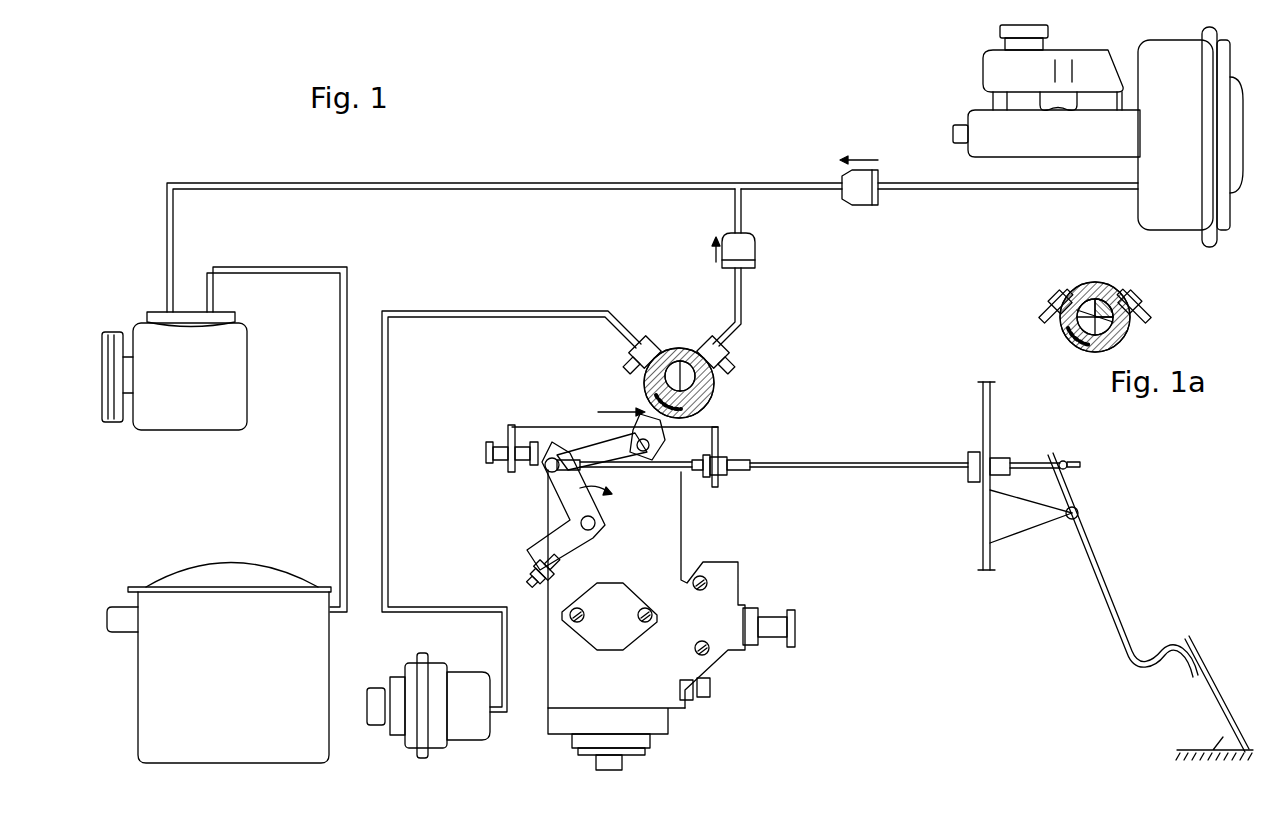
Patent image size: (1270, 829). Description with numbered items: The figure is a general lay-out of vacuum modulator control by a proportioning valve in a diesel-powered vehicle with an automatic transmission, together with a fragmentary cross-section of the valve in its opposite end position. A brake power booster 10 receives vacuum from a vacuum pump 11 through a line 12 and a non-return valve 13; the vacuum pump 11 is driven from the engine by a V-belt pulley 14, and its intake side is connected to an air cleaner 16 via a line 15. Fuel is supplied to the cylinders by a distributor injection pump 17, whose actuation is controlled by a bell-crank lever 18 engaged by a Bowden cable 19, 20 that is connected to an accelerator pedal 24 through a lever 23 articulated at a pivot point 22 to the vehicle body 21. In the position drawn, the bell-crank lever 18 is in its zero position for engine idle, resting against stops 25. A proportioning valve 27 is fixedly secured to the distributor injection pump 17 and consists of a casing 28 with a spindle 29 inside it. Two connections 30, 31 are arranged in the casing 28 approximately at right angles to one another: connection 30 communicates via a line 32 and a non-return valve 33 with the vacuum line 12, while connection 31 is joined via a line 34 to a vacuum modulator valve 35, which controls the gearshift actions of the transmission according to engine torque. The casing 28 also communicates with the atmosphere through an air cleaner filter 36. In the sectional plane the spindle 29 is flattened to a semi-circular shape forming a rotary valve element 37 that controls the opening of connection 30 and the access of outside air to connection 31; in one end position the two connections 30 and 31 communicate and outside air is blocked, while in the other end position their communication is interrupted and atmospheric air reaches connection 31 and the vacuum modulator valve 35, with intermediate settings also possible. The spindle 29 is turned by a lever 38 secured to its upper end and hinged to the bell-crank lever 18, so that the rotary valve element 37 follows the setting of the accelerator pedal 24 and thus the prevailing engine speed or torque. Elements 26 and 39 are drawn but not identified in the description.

In FIG. 1, the brake power booster 10 is at (1182, 105).
In FIG. 1, the vacuum pump 11 is at (215, 352).
In FIG. 1, the line 12 is at (375, 183).
In FIG. 1, the non-return valve 13 is at (876, 195).
In FIG. 1, the V-belt pulley 14 is at (113, 418).
In FIG. 1, the line 15 is at (340, 452).
In FIG. 1, the air cleaner 16 is at (318, 687).
In FIG. 1, the distributor injection pump 17 is at (560, 667).
In FIG. 1, the bell-crank lever 18 is at (562, 483).
In FIG. 1, the Bowden cable 19 is at (663, 470).
In FIG. 1, the Bowden cable 20 is at (772, 468).
In FIG. 1, the vehicle body 21 is at (1027, 522).
In FIG. 1, the pivot point 22 is at (1080, 516).
In FIG. 1, the lever 23 is at (1107, 603).
In FIG. 1, the accelerator pedal 24 is at (1212, 682).
In FIG. 1, the stops 25 is at (502, 453).
In FIG. 1, the adjusting bolt 26 is at (553, 578).
In FIG. 1, the proportioning valve 27 is at (664, 338).
In FIG. 1A, the proportioning valve 27 is at (1092, 275).
In FIG. 1, the casing 28 is at (708, 379).
In FIG. 1A, the casing 28 is at (1135, 327).
In FIG. 1, the spindle 29 is at (662, 389).
In FIG. 1A, the spindle 29 is at (1130, 311).
In FIG. 1, the connection 30 is at (709, 343).
In FIG. 1A, the connection 30 is at (1120, 286).
In FIG. 1, the connection 31 is at (635, 362).
In FIG. 1A, the connection 31 is at (1071, 273).
In FIG. 1, the line 32 is at (745, 284).
In FIG. 1, the non-return valve 33 is at (745, 251).
In FIG. 1, the line 34 is at (440, 317).
In FIG. 1, the vacuum modulator valve 35 is at (465, 680).
In FIG. 1, the air cleaner filter 36 is at (676, 416).
In FIG. 1A, the air cleaner filter 36 is at (1081, 347).
In FIG. 1, the rotary valve element 37 is at (681, 362).
In FIG. 1A, the rotary valve element 37 is at (1068, 325).
In FIG. 1, the lever 38 is at (657, 437).
In FIG. 1, the connecting link 39 is at (610, 456).